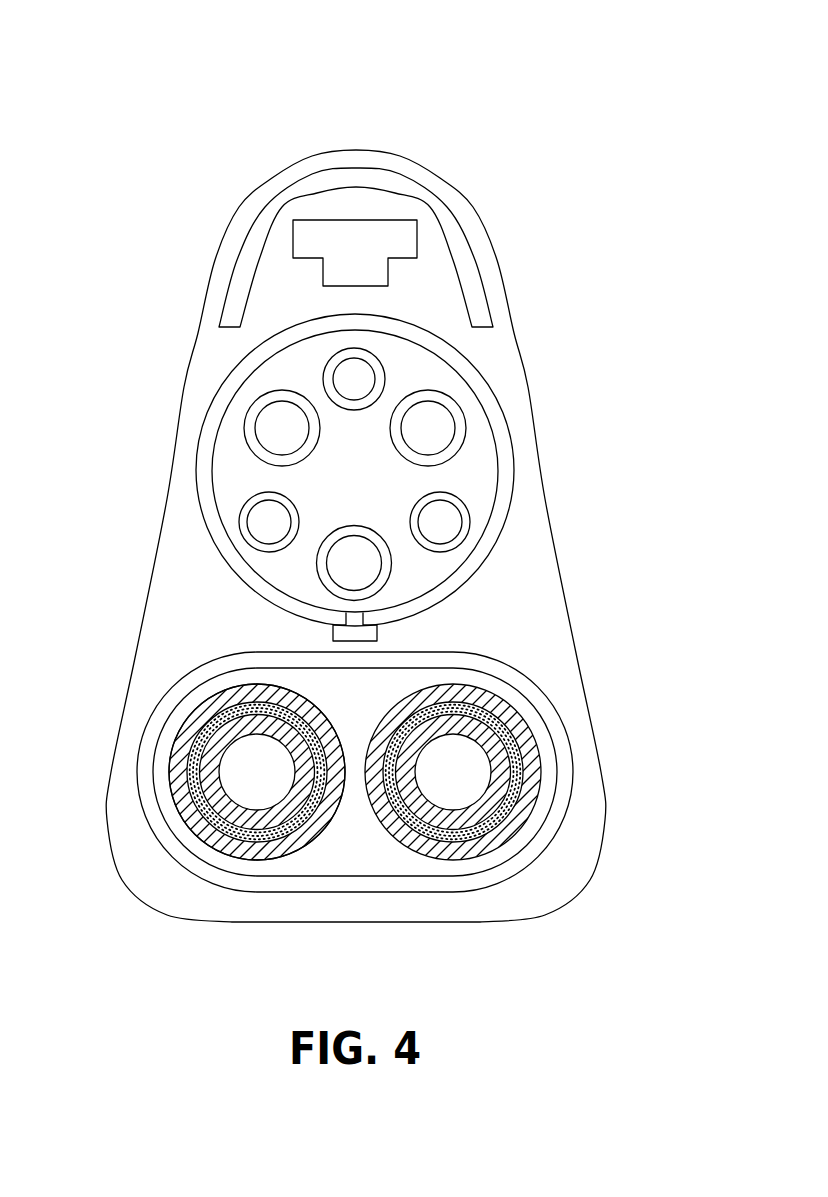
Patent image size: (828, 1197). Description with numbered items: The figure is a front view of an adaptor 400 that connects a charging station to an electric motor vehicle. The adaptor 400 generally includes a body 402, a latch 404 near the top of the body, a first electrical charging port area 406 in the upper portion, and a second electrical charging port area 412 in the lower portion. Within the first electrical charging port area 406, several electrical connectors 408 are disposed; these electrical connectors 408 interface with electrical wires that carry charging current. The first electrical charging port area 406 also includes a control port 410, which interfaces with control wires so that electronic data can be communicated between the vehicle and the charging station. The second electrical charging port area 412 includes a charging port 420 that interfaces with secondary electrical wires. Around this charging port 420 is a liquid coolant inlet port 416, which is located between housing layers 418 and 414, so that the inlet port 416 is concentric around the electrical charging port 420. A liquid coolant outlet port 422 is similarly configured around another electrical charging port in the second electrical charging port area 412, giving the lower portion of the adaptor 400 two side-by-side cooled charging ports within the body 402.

The adaptor 400 is at (294, 100).
The body 402 is at (505, 365).
The latch 404 is at (310, 238).
The first electrical charging port area 406 is at (418, 572).
The electrical connectors 408 is at (270, 424).
The control port 410 is at (352, 379).
The second electrical charging port area 412 is at (315, 837).
The housing layer 414 is at (522, 822).
The liquid coolant inlet port 416 is at (497, 730).
The housing layer 418 is at (503, 793).
The charging port 420 is at (462, 777).
The liquid coolant outlet port 422 is at (203, 812).